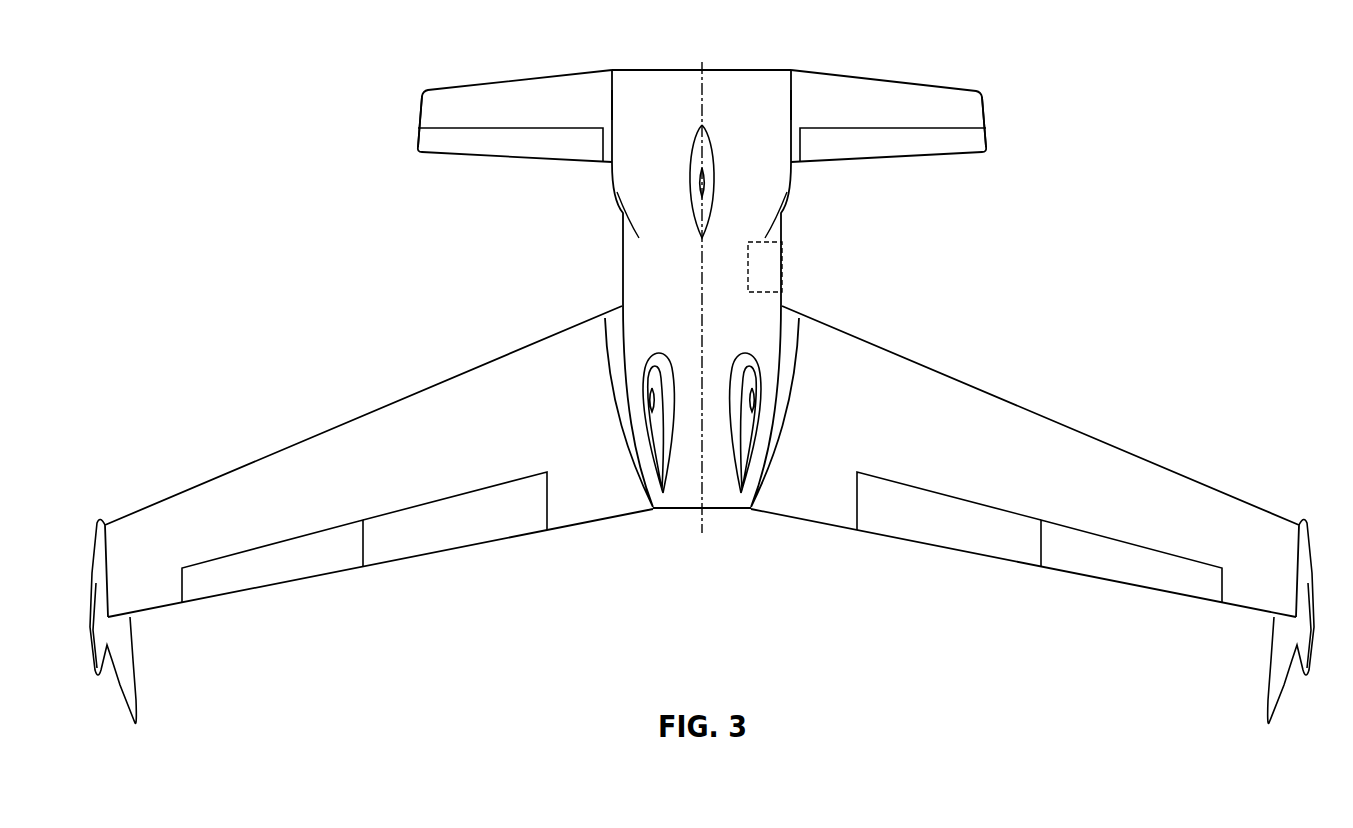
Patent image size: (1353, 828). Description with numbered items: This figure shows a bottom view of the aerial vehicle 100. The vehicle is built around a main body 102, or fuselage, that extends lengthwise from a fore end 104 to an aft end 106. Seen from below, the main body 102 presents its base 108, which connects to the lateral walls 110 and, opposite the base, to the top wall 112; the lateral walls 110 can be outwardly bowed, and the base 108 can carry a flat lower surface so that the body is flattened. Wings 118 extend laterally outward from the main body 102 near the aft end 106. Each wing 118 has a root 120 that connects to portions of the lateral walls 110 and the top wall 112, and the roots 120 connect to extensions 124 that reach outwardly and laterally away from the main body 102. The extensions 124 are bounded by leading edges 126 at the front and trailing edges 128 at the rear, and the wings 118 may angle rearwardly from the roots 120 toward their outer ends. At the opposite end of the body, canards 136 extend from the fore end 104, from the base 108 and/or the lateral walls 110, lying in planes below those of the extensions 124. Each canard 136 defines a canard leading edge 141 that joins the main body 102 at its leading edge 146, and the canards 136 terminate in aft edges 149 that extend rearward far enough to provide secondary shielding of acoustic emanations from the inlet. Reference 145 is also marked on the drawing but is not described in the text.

The aerial vehicle 100 is at (228, 122).
The main body 102 is at (770, 302).
The fore end 104 is at (657, 70).
The aft end 106 is at (678, 512).
The base 108 is at (633, 302).
The lateral walls 110 is at (620, 235).
The top wall 112 is at (702, 280).
The wings 118 is at (262, 460).
The roots 120 is at (633, 463).
The extensions 124 is at (357, 420).
The leading edges 126 is at (432, 388).
The trailing edges 128 is at (440, 550).
The canards 136 is at (528, 78).
The canard leading edge 141 is at (468, 85).
The canard root 145 is at (612, 103).
The leading edge 146 is at (733, 70).
The aft edges 149 is at (527, 161).